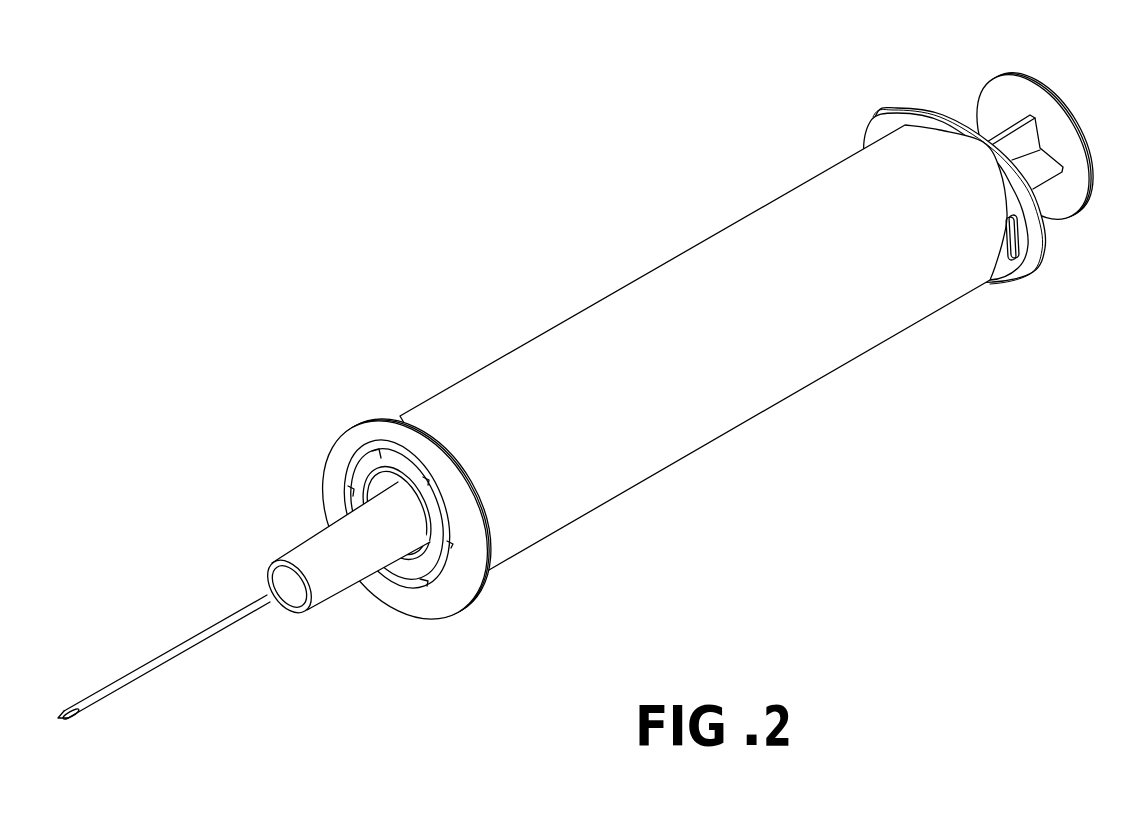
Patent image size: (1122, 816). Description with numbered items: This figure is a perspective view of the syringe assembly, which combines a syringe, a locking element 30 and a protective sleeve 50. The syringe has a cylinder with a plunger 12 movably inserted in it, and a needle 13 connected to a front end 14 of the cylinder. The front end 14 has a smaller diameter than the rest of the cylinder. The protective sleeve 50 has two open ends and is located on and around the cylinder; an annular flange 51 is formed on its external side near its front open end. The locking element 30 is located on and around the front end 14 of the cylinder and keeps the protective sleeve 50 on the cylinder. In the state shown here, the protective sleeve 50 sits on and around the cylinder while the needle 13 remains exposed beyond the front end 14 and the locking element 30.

The plunger 12 is at (1003, 132).
The needle 13 is at (153, 660).
The front end 14 is at (433, 557).
The locking element 30 is at (352, 453).
The protective sleeve 50 is at (618, 313).
The annular flange 51 is at (395, 423).